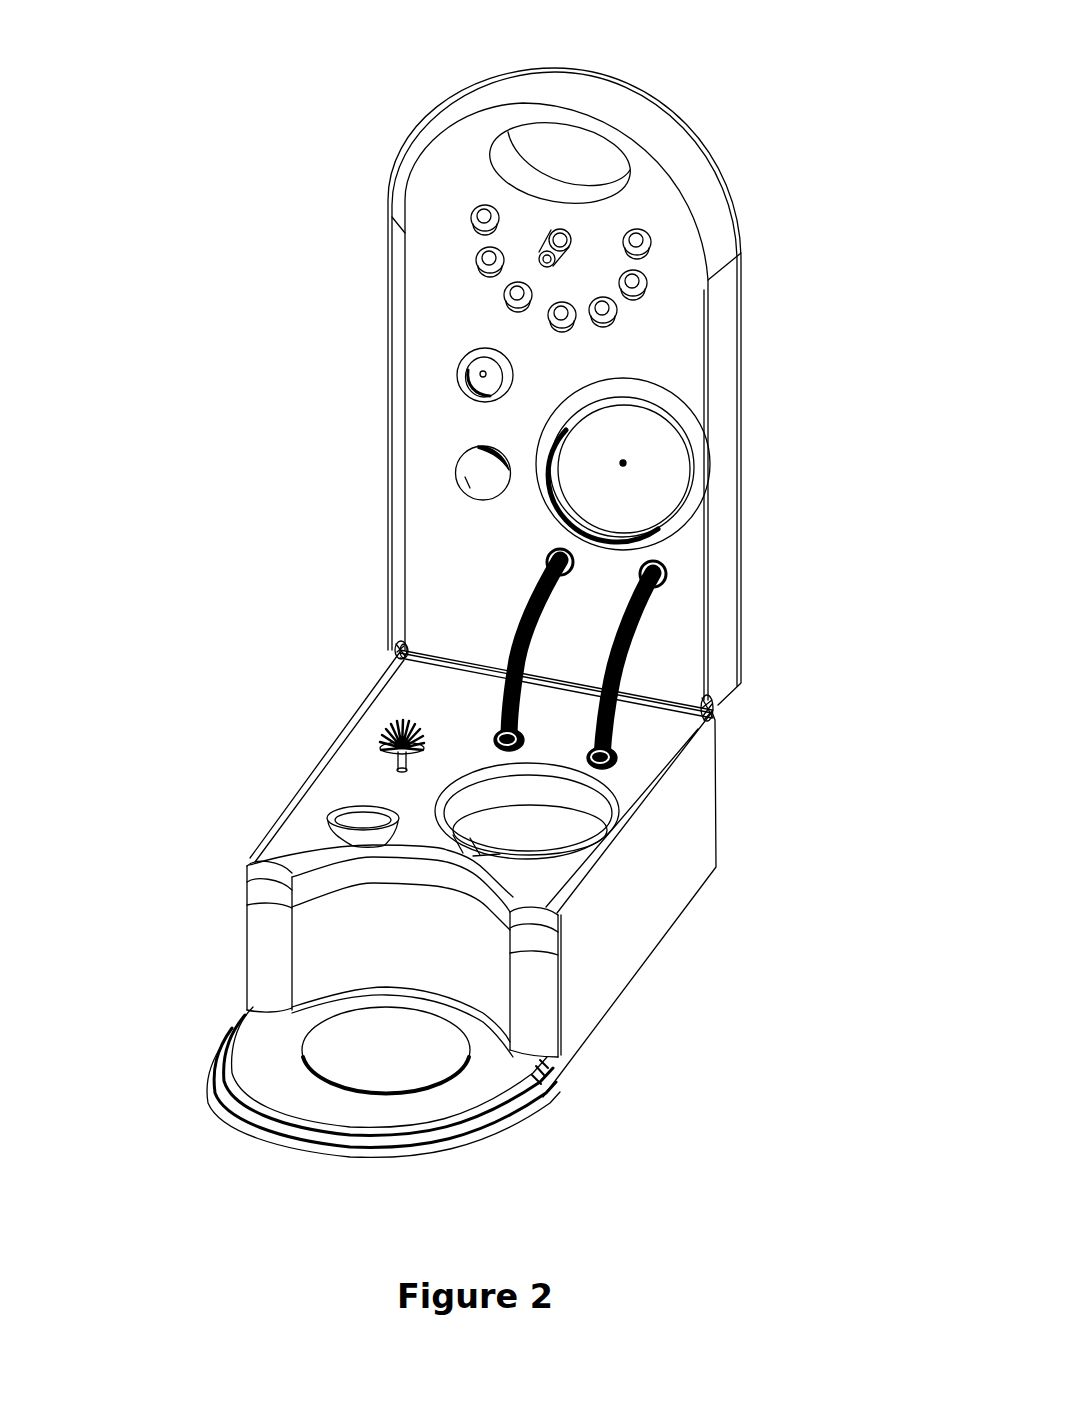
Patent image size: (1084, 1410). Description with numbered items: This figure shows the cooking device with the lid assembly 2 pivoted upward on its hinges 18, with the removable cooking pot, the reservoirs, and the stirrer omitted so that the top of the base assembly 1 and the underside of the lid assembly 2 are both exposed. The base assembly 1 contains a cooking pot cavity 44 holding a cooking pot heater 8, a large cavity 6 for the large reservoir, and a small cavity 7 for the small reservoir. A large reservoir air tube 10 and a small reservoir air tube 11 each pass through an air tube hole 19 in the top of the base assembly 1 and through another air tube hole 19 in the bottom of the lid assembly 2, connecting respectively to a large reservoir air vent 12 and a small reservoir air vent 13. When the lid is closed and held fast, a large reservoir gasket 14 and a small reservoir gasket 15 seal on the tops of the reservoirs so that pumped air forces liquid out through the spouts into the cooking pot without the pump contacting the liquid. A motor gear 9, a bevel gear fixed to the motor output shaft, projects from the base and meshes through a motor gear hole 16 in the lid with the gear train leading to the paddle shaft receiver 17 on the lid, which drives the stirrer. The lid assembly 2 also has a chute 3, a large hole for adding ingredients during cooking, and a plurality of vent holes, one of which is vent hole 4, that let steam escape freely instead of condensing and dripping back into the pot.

The base assembly 1 is at (700, 833).
The lid assembly 2 is at (700, 162).
The chute 3 is at (570, 153).
The vent hole 4 is at (480, 210).
The large cavity 6 is at (553, 832).
The small cavity 7 is at (365, 825).
The cooking pot heater 8 is at (397, 1060).
The motor gear 9 is at (393, 730).
The large reservoir air tube 10 is at (617, 667).
The small reservoir air tube 11 is at (540, 610).
The large reservoir air vent 12 is at (623, 463).
The small reservoir air vent 13 is at (480, 374).
The large reservoir gasket 14 is at (672, 418).
The small reservoir gasket 15 is at (470, 349).
The motor gear hole 16 is at (463, 482).
The paddle shaft receiver 17 is at (550, 240).
The hinges 18 is at (397, 648).
The air tube hole 19 is at (657, 560).
The cooking pot cavity 44 is at (358, 937).